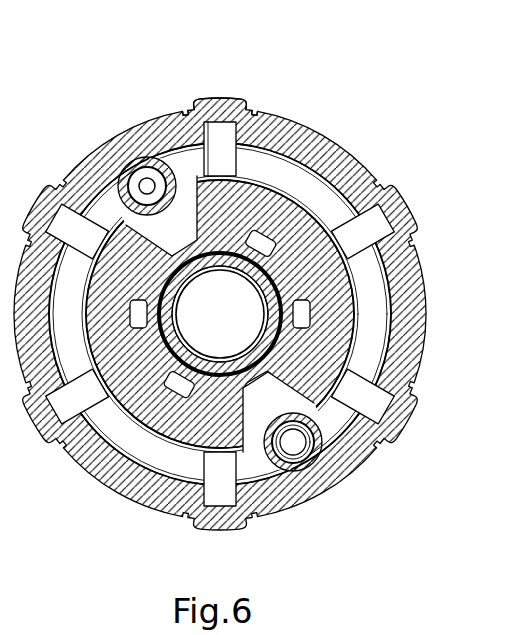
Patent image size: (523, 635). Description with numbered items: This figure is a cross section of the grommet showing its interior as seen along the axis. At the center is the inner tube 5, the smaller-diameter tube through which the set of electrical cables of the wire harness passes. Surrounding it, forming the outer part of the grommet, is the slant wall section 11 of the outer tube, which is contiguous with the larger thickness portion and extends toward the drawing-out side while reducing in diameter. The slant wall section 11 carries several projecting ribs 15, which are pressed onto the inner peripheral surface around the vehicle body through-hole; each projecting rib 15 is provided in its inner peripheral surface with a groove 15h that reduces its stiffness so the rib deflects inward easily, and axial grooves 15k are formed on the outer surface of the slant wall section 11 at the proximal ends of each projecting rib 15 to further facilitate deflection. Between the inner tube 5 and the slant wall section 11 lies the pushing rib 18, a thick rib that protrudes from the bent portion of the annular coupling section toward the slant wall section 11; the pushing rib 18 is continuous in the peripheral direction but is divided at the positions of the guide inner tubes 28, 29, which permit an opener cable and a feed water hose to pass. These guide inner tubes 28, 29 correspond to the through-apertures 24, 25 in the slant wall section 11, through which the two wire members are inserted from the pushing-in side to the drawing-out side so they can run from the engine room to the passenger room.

The slant wall section 11 is at (337, 131).
The projecting rib 15 is at (219, 130).
The groove 15h is at (247, 101).
The axial groove 15k is at (191, 107).
The pushing rib 18 is at (338, 303).
The inner tube 5 is at (348, 362).
The guide inner tube 29 is at (195, 152).
The through-aperture 25 is at (130, 182).
The guide inner tube 28 is at (318, 433).
The through-aperture 24 is at (300, 452).